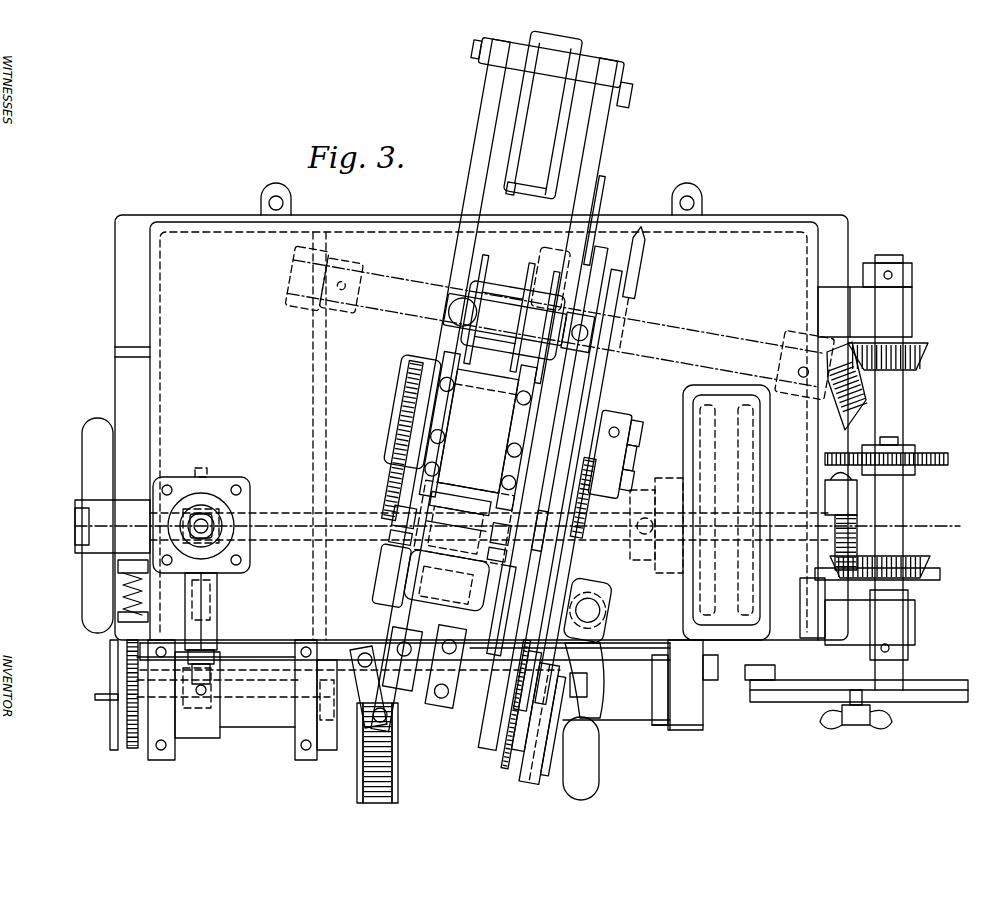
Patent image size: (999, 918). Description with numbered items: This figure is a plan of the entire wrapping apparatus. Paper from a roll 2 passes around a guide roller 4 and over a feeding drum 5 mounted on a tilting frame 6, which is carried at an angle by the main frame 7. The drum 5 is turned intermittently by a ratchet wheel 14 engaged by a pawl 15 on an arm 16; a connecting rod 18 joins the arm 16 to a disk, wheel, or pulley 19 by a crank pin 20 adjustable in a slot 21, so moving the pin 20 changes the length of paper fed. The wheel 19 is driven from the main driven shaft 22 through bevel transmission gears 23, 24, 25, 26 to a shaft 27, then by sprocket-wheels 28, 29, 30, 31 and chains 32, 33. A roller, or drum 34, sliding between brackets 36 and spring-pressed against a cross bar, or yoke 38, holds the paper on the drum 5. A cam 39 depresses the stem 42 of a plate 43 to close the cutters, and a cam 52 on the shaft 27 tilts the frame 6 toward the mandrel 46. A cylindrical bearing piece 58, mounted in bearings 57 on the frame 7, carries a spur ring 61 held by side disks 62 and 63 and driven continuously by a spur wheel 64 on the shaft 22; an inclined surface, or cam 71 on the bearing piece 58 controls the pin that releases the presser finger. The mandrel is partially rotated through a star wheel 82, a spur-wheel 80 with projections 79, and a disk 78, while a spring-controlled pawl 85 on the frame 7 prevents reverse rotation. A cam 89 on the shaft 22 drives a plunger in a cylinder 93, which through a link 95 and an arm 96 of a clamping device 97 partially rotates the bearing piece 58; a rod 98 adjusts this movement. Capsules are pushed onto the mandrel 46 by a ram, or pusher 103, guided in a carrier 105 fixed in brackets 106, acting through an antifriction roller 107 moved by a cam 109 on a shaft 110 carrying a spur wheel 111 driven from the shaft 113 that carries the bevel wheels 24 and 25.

The roll 2 is at (460, 362).
The guide roller 4 is at (545, 88).
The feeding drum 5 is at (473, 457).
The tilting frame 6 is at (476, 168).
The main frame 7 is at (481, 456).
The ratchet wheel 14 is at (615, 478).
The pawl 15 is at (628, 446).
The arm 16 is at (625, 426).
The connecting rod 18 is at (620, 612).
The disk, wheel, or pulley 19 is at (515, 775).
The crank pin 20 is at (540, 724).
The slot 21 is at (522, 738).
The main driven shaft 22 is at (288, 516).
The bevel transmission gear 23 is at (856, 549).
The bevel transmission gear 24 is at (916, 561).
The bevel transmission gear 25 is at (912, 362).
The bevel transmission gear 26 is at (850, 420).
The shaft 27 is at (690, 346).
The sprocket-wheel 28 is at (600, 378).
The sprocket-wheel 29 is at (598, 595).
The sprocket-wheel 30 is at (548, 538).
The sprocket-wheel 31 is at (500, 770).
The chain 32 is at (618, 276).
The chain 33 is at (516, 628).
The roller, or drum 34 is at (448, 555).
The brackets 36 is at (388, 553).
The cross bar, or yoke 38 is at (388, 575).
The cam 39 is at (412, 715).
The stem 42 is at (372, 602).
The plate 43 is at (446, 592).
The mandrel 46 is at (436, 735).
The cam 52 is at (515, 256).
The bearings 57 is at (168, 730).
The cylindrical bearing piece 58 is at (257, 717).
The spur ring 61 is at (378, 803).
The side disk 62 is at (397, 795).
The side disk 63 is at (360, 796).
The spur wheel 64 is at (390, 440).
The inclined surface, or cam 71 is at (352, 716).
The disk 78 is at (110, 728).
The projections 79 is at (100, 698).
The spur-wheel 80 is at (126, 666).
The star wheel 82 is at (327, 752).
The spring-controlled pawl 85 is at (112, 632).
The cam 89 is at (206, 478).
The cylinder 93 is at (226, 546).
The link 95 is at (205, 637).
The arm 96 is at (212, 660).
The clamping device 97 is at (205, 728).
The rod 98 is at (199, 513).
The ram, or pusher 103 is at (719, 692).
The carrier 105 is at (611, 721).
The brackets 106 is at (690, 728).
The antifriction roller 107 is at (849, 700).
The cam 109 is at (940, 690).
The shaft 110 is at (908, 600).
The spur wheel 111 is at (948, 461).
The shaft 113 is at (893, 425).